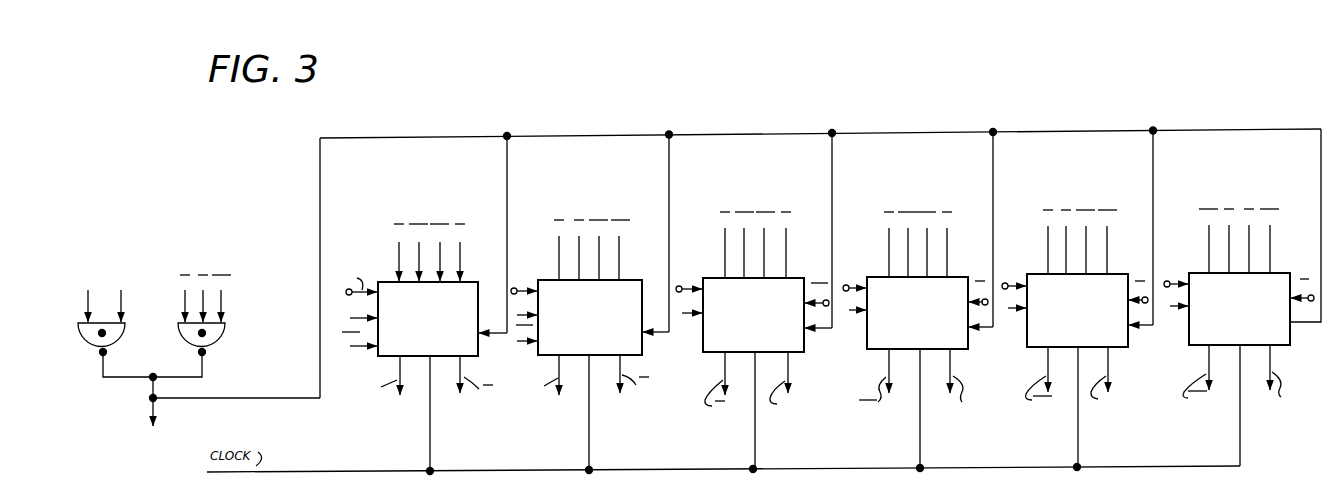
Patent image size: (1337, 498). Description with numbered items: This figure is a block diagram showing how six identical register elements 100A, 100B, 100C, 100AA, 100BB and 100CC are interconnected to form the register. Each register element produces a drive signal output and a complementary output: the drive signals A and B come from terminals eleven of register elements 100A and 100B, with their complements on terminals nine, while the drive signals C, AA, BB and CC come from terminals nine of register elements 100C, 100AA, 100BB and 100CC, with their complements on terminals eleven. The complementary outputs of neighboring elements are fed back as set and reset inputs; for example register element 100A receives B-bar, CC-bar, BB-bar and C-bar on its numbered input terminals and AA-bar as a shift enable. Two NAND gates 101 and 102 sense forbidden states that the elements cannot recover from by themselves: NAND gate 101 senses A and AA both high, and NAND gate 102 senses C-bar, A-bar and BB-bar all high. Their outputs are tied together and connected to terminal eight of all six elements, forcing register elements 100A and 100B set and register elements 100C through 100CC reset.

The NAND gate 101 is at (92, 344).
The NAND gate 102 is at (180, 344).
The register element 100A is at (450, 326).
The register element 100B is at (608, 324).
The register element 100C is at (770, 324).
The register element 100AA is at (935, 322).
The register element 100BB is at (1095, 320).
The register element 100CC is at (1260, 319).